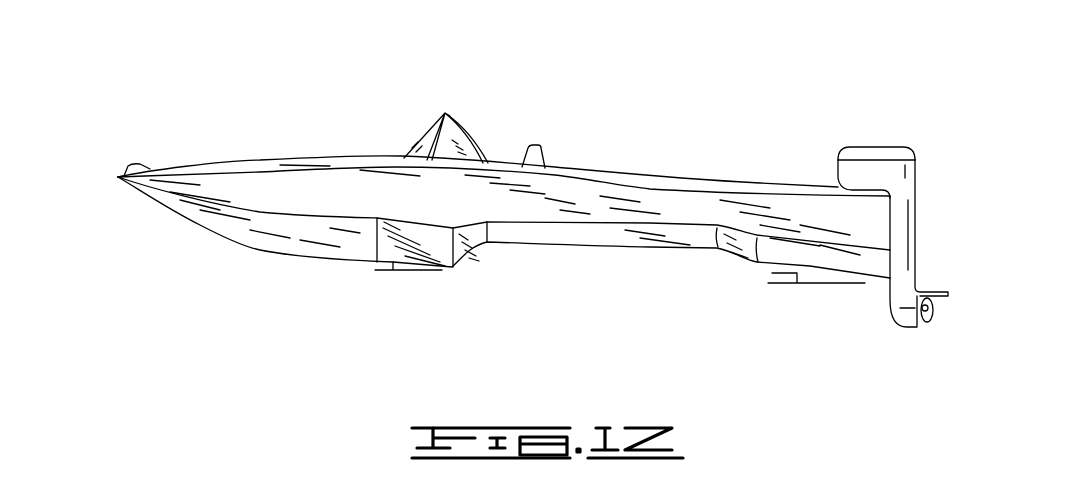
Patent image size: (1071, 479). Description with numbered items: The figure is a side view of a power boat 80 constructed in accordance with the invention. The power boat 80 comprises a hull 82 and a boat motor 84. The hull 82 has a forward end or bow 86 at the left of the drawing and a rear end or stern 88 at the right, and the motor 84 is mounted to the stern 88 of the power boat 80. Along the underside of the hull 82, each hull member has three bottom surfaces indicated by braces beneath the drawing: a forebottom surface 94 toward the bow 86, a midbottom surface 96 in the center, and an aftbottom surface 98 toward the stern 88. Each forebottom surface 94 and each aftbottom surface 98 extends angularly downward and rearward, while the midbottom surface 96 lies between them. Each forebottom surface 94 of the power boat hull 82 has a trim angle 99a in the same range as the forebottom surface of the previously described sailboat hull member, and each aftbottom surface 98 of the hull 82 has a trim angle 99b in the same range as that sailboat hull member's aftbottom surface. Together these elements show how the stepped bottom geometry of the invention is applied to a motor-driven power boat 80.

The power boat 80 is at (333, 110).
The hull 82 is at (477, 198).
The boat motor 84 is at (873, 145).
The bow 86 is at (118, 177).
The stern 88 is at (892, 223).
The forebottom surface 94 is at (130, 320).
The midbottom surface 96 is at (465, 325).
The aftbottom surface 98 is at (750, 325).
The trim angle 99a is at (373, 264).
The trim angle 99b is at (772, 273).